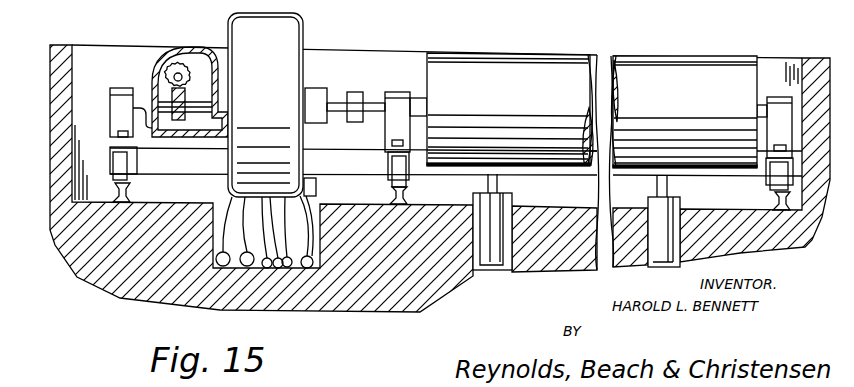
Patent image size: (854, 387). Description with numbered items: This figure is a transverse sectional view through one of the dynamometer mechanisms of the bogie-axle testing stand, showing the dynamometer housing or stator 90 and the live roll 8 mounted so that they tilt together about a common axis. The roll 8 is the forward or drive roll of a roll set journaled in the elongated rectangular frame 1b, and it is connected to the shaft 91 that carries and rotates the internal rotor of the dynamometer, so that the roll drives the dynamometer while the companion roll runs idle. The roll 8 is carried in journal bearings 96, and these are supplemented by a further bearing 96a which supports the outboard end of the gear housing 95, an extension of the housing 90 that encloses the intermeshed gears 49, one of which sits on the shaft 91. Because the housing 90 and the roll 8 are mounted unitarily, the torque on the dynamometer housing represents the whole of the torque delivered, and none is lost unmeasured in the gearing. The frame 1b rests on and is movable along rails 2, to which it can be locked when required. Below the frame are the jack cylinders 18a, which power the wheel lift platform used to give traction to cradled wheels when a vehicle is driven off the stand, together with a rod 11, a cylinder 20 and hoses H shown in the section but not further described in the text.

The gear housing 95 is at (151, 74).
The intermeshed gears 49 is at (187, 66).
The bearing 96a is at (123, 97).
The rails 2 is at (133, 190).
The housing or stator 90 is at (276, 68).
The shaft 91 is at (337, 98).
The journal bearings 96 is at (397, 100).
The roll 8 is at (507, 65).
The piston rod 11 is at (437, 175).
The jack cylinders 18a is at (632, 265).
The hydraulic cylinder 20 is at (648, 203).
The frame 1b is at (525, 170).
The hoses H is at (255, 224).